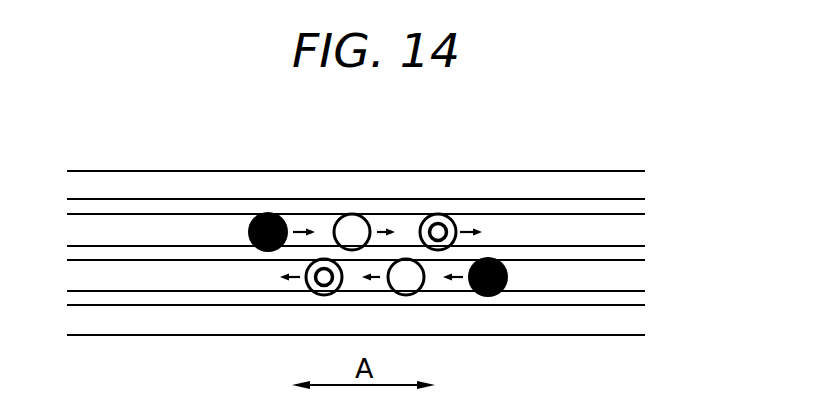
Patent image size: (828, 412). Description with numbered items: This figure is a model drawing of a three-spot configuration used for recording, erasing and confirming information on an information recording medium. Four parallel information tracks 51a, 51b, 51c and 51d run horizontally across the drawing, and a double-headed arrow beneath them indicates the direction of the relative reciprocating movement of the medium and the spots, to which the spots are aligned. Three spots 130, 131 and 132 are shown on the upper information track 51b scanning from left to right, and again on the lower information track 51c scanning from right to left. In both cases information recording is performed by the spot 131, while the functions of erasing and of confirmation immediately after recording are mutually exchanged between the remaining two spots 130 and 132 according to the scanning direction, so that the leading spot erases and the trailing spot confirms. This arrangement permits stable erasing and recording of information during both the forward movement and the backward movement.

The information track 51a is at (638, 185).
The information track 51b is at (638, 230).
The information track 51c is at (638, 278).
The information track 51d is at (638, 323).
The spot 130 is at (323, 258).
The spot 131 is at (405, 258).
The spot 132 is at (490, 257).